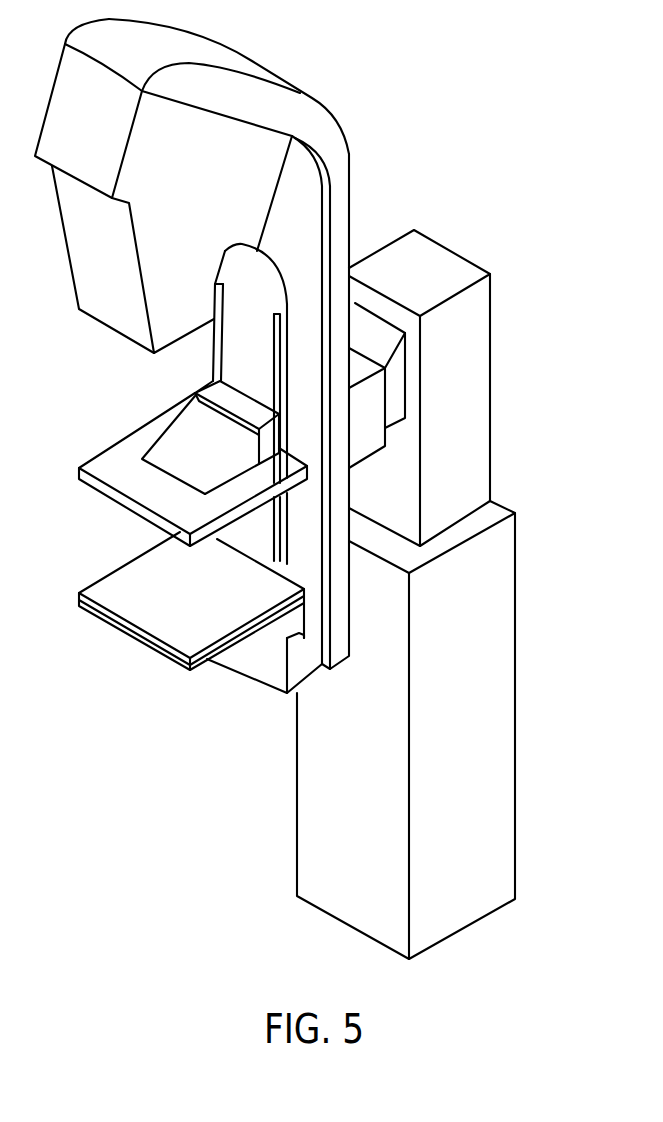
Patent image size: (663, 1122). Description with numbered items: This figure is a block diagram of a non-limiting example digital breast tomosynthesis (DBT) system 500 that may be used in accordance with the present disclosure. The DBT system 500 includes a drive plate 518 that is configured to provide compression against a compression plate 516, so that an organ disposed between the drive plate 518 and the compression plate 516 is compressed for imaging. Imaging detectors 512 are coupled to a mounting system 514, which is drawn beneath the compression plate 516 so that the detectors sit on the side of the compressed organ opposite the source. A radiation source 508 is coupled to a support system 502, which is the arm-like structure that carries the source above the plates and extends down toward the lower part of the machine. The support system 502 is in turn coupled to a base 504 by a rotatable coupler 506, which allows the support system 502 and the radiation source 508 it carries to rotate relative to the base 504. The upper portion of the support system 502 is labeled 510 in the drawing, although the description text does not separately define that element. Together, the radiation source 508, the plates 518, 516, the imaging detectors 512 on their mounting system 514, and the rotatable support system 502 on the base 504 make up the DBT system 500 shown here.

The digital breast tomosynthesis (DBT) system 500 is at (298, 483).
The support system 502 is at (347, 220).
The base 504 is at (515, 689).
The rotatable coupler 506 is at (357, 460).
The radiation source 508 is at (92, 326).
The arm upper portion 510 is at (286, 66).
The imaging detectors 512 is at (192, 667).
The mounting system 514 is at (268, 700).
The compression plate 516 is at (83, 590).
The drive plate 518 is at (92, 485).